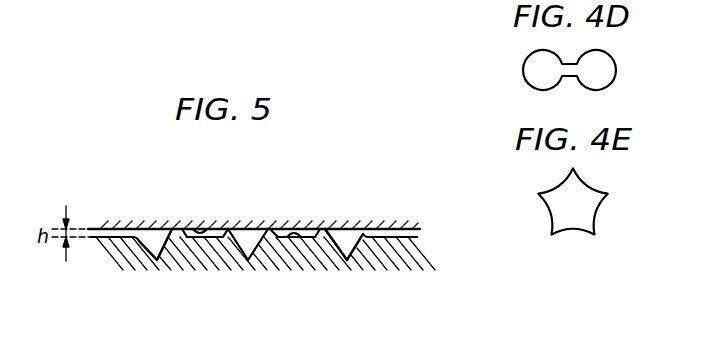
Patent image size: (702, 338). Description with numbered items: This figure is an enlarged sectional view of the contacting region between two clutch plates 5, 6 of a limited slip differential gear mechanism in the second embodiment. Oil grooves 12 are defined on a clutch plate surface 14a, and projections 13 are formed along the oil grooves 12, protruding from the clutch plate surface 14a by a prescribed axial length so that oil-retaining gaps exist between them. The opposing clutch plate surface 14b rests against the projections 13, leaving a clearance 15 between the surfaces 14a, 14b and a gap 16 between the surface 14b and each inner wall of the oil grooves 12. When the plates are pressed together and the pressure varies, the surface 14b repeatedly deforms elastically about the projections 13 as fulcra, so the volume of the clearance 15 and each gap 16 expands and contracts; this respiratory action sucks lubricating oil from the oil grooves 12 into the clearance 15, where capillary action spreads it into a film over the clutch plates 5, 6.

The clutch plate 5 is at (206, 262).
The clutch plate 6 is at (225, 229).
The oil groove 12 is at (166, 250).
The projection 13 is at (140, 236).
The clutch plate surface 14a is at (298, 240).
The clutch plate surface 14b is at (196, 228).
The clearance 15 is at (122, 233).
The gap 16 is at (247, 256).